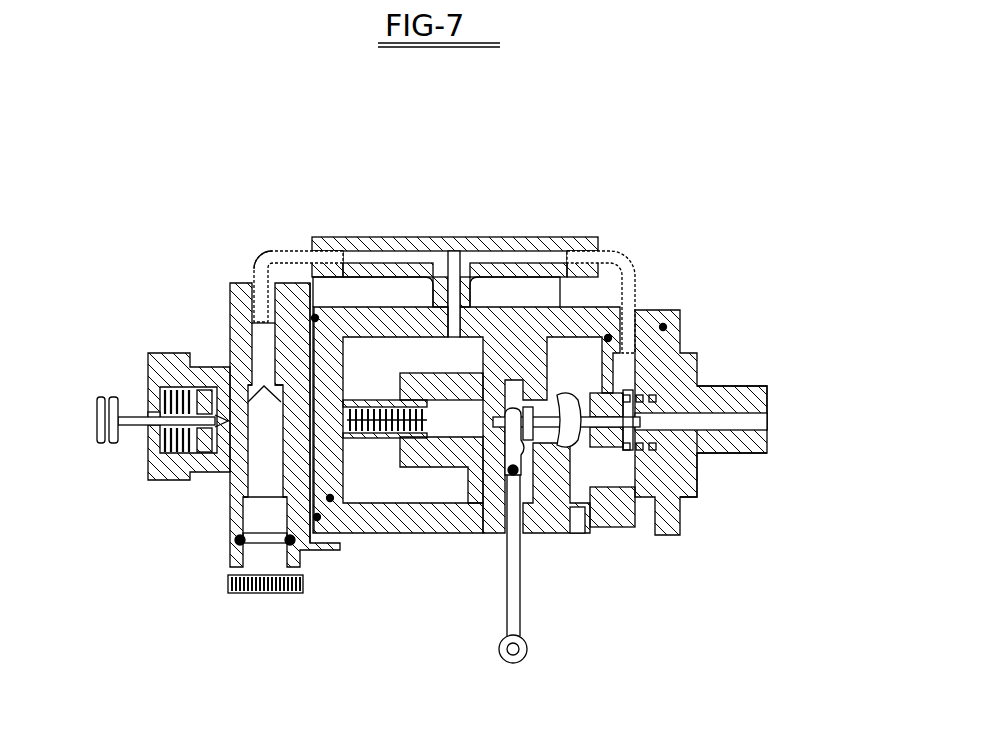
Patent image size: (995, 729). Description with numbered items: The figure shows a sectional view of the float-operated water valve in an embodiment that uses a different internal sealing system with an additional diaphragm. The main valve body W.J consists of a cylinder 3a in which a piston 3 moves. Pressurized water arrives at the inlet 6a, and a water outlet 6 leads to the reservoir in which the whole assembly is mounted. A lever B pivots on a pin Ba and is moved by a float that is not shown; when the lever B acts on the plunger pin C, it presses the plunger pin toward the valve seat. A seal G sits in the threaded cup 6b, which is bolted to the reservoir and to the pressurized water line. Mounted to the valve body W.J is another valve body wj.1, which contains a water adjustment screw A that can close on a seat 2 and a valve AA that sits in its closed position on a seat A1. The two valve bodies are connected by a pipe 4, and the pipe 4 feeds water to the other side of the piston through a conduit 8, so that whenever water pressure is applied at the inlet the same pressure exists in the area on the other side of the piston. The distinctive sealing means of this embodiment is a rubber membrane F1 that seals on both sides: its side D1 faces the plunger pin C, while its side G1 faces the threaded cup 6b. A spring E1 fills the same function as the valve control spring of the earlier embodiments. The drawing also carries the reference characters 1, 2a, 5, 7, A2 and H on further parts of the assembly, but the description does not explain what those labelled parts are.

The operating knob 1 is at (100, 445).
The seat 2 is at (245, 402).
The valve poppet 2a is at (251, 380).
The piston 3 is at (307, 240).
The cylinder 3a is at (263, 250).
The pipe 4 is at (373, 238).
The spring seat 5 is at (370, 440).
The water outlet 6 is at (577, 533).
The inlet 6a is at (723, 417).
The threaded cup 6b is at (740, 447).
The piston 7 is at (410, 440).
The conduit 8 is at (462, 268).
The water adjustment screw A is at (245, 593).
The seat A1 is at (232, 478).
The valve housing wall A2 is at (318, 550).
The valve AA is at (223, 432).
The lever B is at (520, 627).
The pin Ba is at (514, 474).
The plunger pin C is at (527, 405).
The side of rubber membrane D1 is at (572, 468).
The spring E1 is at (640, 398).
The rubber membrane F1 is at (630, 497).
The seal G is at (680, 477).
The side of rubber membrane G1 is at (697, 452).
The return pipe H is at (628, 290).
The valve body W.J is at (443, 533).
The valve body wj.1 is at (226, 466).